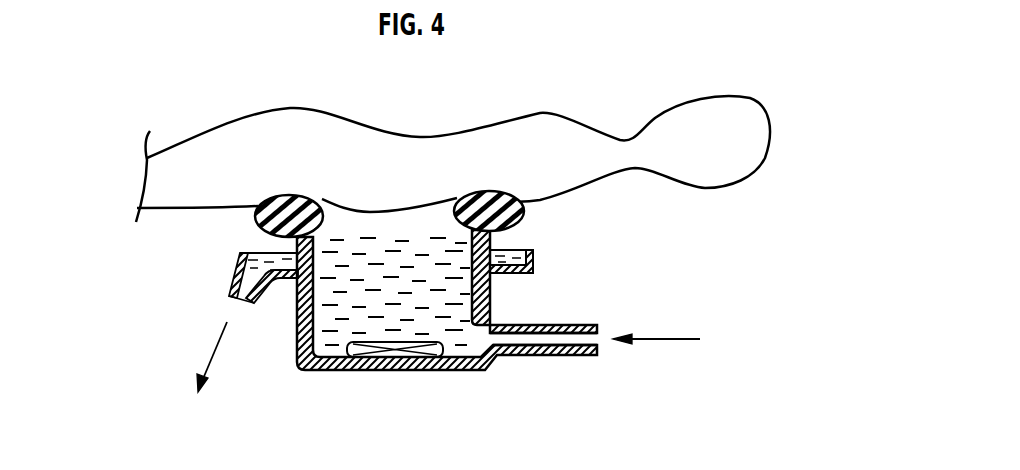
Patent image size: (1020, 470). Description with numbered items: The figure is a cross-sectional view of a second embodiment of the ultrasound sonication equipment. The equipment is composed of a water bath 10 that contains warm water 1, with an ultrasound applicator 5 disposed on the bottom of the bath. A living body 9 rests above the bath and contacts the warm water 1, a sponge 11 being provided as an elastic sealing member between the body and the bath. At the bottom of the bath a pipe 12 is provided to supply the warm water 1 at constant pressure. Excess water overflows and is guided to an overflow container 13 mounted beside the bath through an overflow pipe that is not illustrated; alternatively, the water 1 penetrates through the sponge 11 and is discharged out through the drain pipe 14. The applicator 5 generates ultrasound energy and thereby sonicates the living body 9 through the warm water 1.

The warm water 1 is at (449, 300).
The ultrasound applicator 5 is at (437, 353).
The living body 9 is at (585, 114).
The water bath 10 is at (297, 328).
The sponge 11 is at (257, 228).
The pipe 12 is at (552, 358).
The overflow container 13 is at (237, 262).
The drain pipe 14 is at (228, 287).